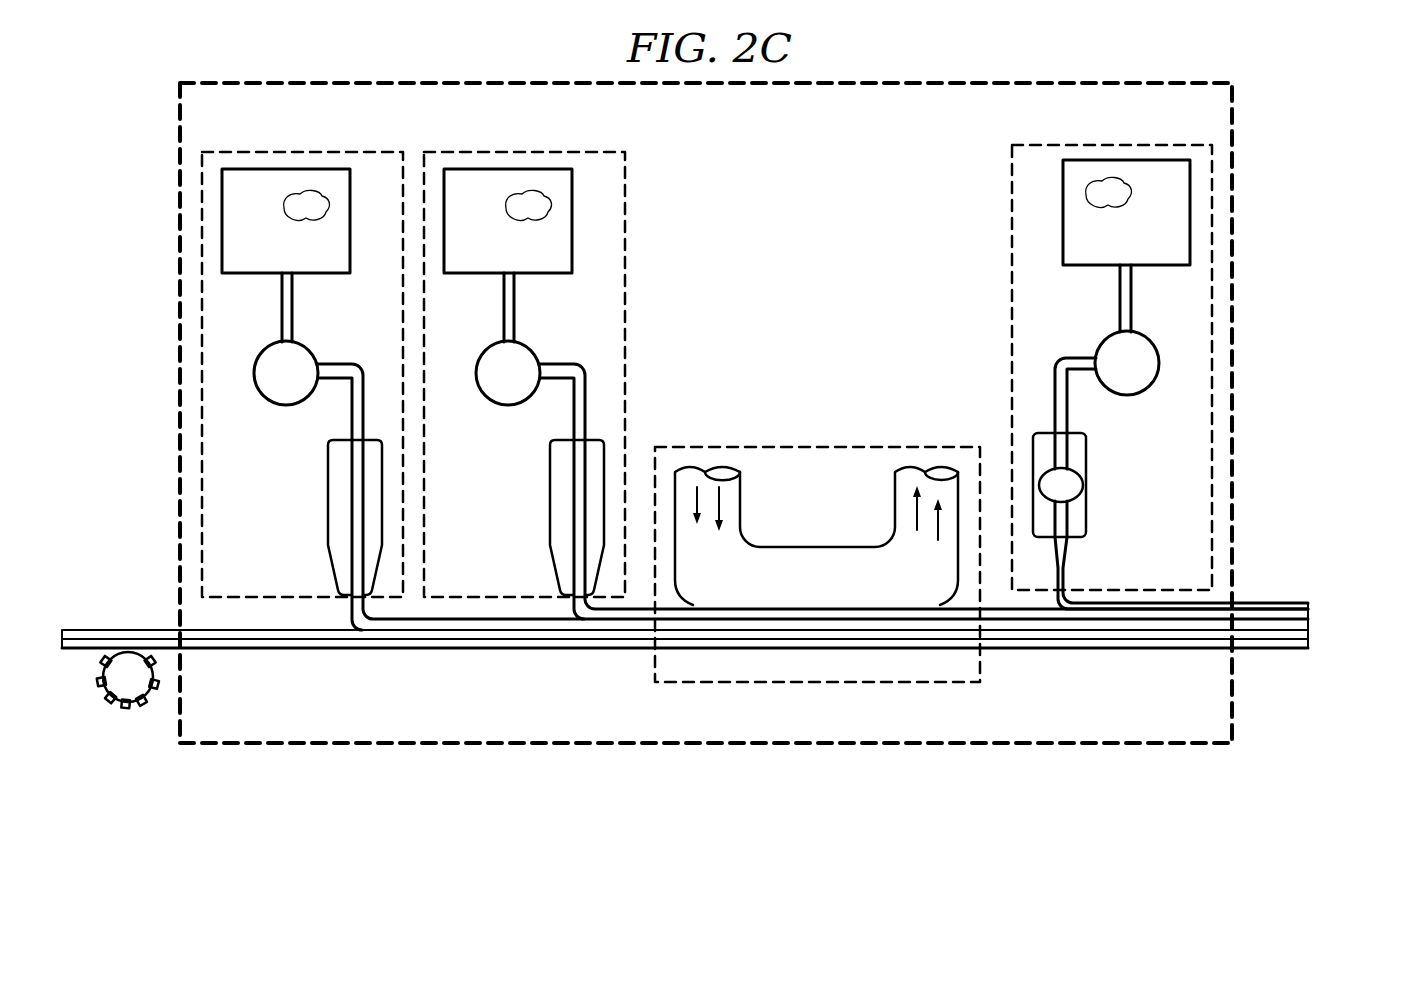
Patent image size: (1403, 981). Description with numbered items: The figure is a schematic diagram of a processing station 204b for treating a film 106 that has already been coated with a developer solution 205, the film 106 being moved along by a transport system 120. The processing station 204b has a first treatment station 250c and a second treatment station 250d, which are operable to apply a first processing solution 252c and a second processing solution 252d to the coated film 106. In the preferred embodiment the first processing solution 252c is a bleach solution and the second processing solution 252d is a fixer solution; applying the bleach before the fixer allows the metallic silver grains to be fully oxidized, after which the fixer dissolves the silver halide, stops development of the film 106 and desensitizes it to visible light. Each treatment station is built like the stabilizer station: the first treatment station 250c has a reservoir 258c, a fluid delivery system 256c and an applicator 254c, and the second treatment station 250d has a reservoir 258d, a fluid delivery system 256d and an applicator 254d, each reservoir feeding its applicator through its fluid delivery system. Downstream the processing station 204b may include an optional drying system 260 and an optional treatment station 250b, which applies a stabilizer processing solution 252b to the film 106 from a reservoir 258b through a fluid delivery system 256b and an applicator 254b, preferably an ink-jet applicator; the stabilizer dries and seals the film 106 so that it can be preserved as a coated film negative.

The processing station 204b is at (179, 130).
The first treatment station 250c is at (303, 150).
The second treatment station 250d is at (525, 150).
The optional treatment station 250b is at (1110, 144).
The first processing solution 252c is at (297, 224).
The second processing solution 252d is at (519, 224).
The stabilizer processing solution 252b is at (1114, 222).
The reservoir 258c is at (328, 276).
The reservoir 258d is at (550, 276).
The reservoir 258b is at (1080, 268).
The fluid delivery system 256c is at (268, 400).
The fluid delivery system 256d is at (490, 400).
The fluid delivery system 256b is at (1138, 393).
The applicator 254c is at (328, 497).
The applicator 254d is at (550, 497).
The applicator 254b is at (1088, 490).
The drying system 260 is at (822, 447).
The developer solution 205 is at (92, 630).
The film 106 is at (72, 649).
The transport system 120 is at (128, 706).